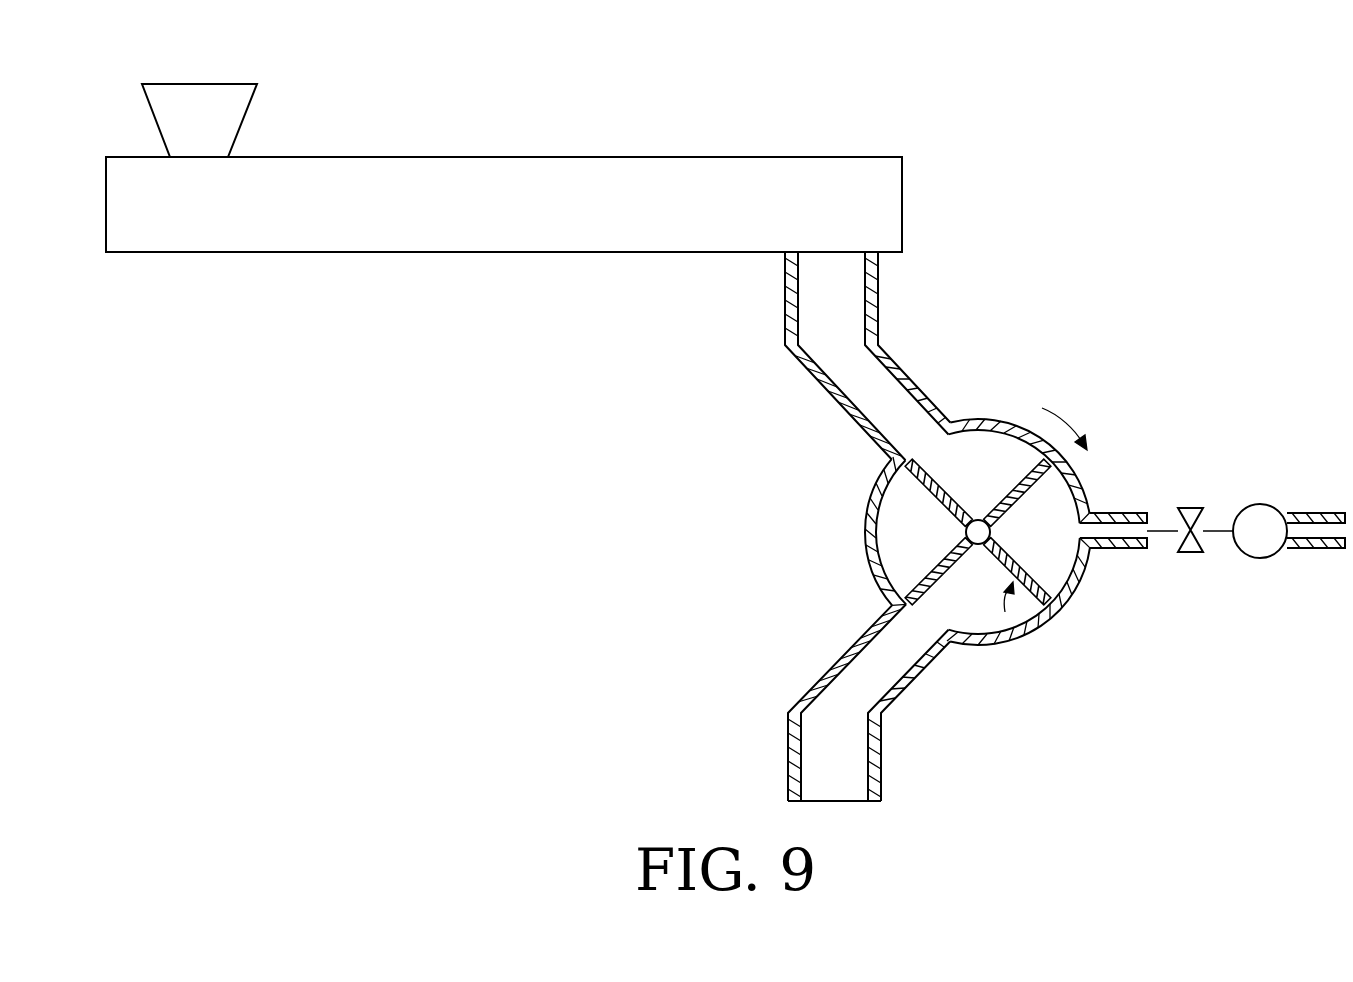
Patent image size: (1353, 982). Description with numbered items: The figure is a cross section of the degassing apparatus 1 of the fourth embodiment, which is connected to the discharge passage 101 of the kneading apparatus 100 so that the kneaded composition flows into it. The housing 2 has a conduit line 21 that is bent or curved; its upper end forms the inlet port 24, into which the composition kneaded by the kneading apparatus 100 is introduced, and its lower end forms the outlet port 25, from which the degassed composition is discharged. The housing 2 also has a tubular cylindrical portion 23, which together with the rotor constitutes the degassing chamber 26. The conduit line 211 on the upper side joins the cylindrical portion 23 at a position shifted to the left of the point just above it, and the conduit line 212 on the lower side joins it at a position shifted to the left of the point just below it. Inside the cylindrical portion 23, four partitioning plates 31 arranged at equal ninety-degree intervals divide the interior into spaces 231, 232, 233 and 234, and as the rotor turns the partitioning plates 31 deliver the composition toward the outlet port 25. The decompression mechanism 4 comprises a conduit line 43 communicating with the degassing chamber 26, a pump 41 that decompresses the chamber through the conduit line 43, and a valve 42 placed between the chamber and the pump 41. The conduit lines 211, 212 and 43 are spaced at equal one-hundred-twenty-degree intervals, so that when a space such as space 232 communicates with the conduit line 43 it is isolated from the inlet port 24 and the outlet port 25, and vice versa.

The kneading apparatus 100 is at (369, 122).
The discharge passage 101 is at (832, 255).
The inlet port 24 is at (813, 252).
The conduit line 21 is at (785, 526).
The conduit line 211 is at (810, 378).
The conduit line 212 is at (787, 755).
The outlet port 25 is at (840, 801).
The degassing apparatus 1 is at (1130, 399).
The housing 2 is at (848, 517).
The cylindrical portion 23 is at (910, 553).
The degassing chamber 26 is at (870, 497).
The partitioning plate 31 is at (915, 478).
The space 231 is at (985, 462).
The space 232 is at (1090, 565).
The space 233 is at (975, 597).
The space 234 is at (883, 570).
The decompression mechanism 4 is at (1231, 482).
The pump 41 is at (1262, 505).
The valve 42 is at (1190, 508).
The conduit line 43 is at (1125, 548).